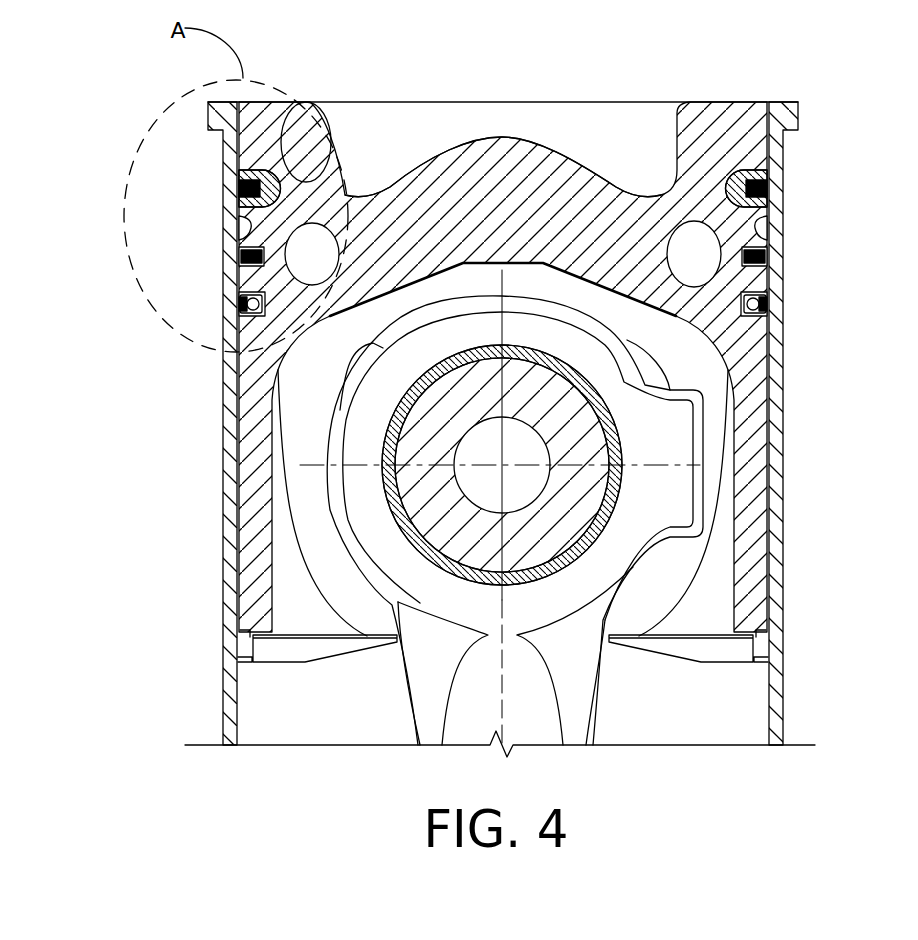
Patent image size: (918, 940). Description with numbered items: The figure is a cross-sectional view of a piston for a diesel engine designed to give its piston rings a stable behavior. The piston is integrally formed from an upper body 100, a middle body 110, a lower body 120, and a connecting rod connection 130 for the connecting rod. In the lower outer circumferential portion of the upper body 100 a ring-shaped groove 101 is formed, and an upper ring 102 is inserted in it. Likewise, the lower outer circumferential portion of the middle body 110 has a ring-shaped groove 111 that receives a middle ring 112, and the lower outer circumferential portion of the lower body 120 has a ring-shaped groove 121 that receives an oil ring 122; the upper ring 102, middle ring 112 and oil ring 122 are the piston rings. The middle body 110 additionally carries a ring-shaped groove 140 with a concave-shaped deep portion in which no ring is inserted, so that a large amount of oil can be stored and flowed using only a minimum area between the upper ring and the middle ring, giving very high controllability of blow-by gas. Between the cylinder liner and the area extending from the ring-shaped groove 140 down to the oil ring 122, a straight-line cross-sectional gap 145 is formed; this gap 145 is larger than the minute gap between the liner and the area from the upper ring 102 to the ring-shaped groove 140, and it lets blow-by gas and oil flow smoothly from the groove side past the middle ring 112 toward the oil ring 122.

The upper body 100 is at (240, 147).
The ring-shaped groove 101 is at (318, 112).
The upper ring 102 is at (238, 190).
The middle body 110 is at (250, 237).
The ring-shaped groove 111 is at (341, 193).
The middle ring 112 is at (245, 262).
The lower body 120 is at (243, 298).
The ring-shaped groove 121 is at (255, 315).
The oil ring 122 is at (247, 310).
The connecting rod connection 130 is at (245, 490).
The ring-shaped groove 140 is at (240, 195).
The gap 145 is at (240, 257).